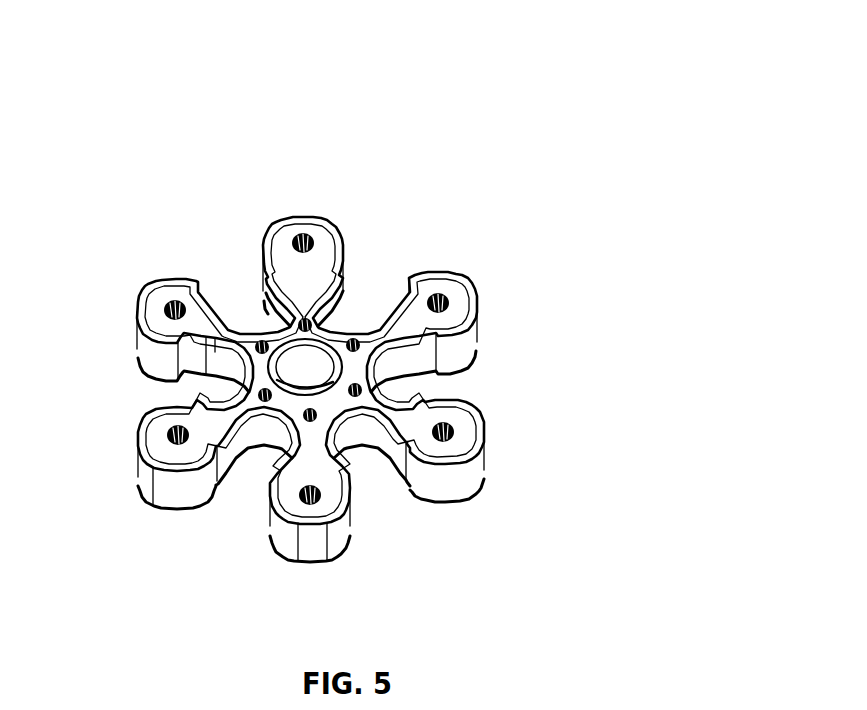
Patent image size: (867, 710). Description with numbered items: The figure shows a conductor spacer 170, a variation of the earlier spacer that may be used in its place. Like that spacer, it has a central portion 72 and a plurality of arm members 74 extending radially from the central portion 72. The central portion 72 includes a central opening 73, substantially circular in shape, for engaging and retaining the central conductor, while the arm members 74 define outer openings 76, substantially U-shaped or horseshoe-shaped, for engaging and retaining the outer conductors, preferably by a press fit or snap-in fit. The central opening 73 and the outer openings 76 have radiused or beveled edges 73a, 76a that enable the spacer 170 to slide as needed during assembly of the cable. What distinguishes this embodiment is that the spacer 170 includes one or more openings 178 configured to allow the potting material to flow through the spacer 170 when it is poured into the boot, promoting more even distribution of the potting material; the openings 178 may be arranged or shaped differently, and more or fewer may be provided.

The conductor spacer 170 is at (378, 138).
The central portion 72 is at (263, 363).
The central opening 73 is at (305, 366).
The radiused or beveled edge 73a is at (326, 346).
The arm member 74 is at (563, 412).
The outer opening 76 is at (87, 398).
The radiused or beveled edge 76a is at (380, 369).
The opening 178 is at (62, 333).